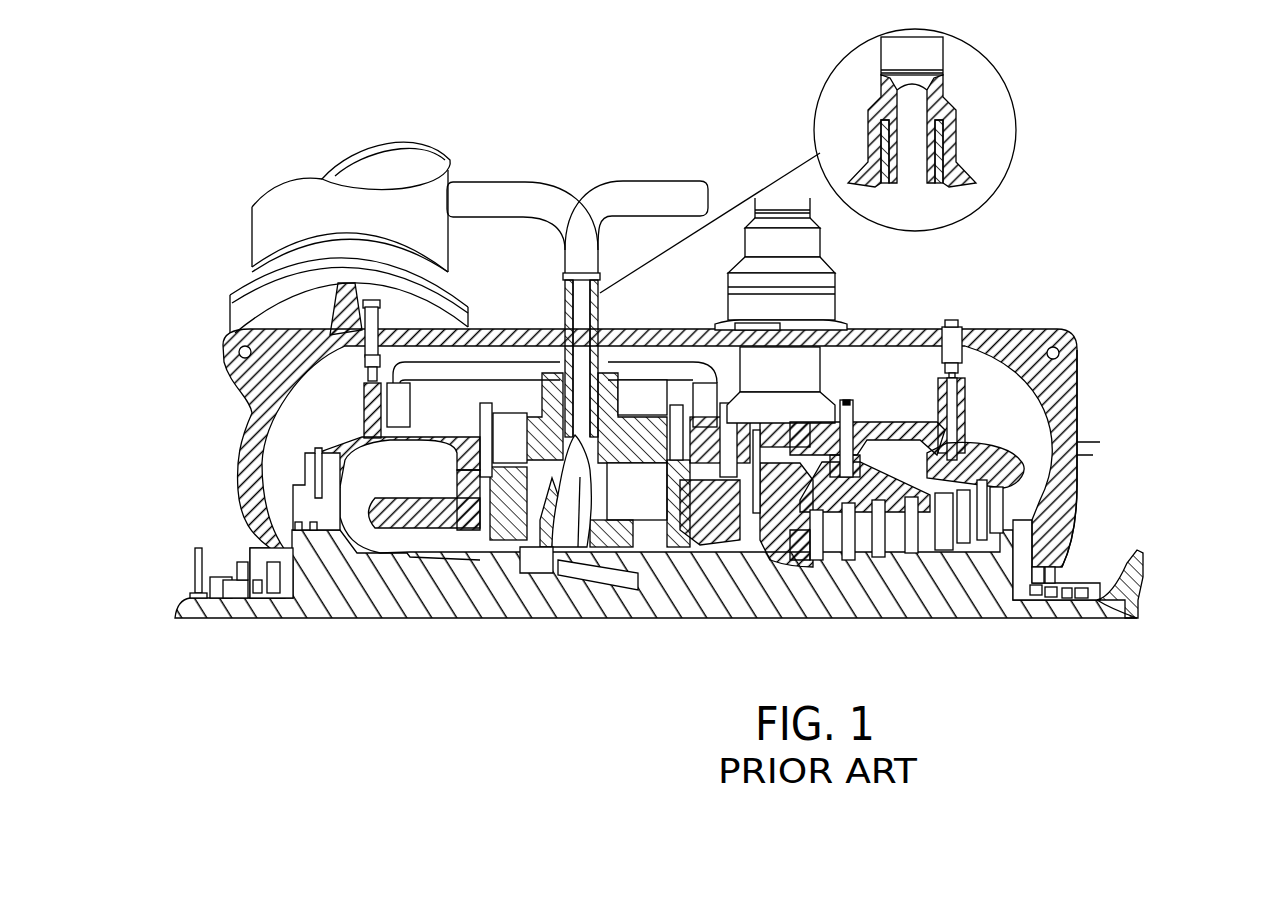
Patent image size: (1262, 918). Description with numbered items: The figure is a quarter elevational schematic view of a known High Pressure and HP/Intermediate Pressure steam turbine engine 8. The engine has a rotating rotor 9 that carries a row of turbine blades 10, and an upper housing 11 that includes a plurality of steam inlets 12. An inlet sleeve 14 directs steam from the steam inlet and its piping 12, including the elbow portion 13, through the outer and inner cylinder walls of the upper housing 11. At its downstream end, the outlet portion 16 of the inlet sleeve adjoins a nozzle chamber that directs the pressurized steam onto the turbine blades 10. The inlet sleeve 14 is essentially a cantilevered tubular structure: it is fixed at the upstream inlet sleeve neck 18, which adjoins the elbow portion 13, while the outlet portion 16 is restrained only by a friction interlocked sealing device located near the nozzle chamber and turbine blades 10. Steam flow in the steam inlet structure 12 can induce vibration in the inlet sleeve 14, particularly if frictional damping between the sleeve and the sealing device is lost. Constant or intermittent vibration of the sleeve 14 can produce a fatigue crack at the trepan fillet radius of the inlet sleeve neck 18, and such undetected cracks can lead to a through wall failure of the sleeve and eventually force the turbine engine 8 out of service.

The steam turbine engine 8 is at (1185, 303).
The rotor 9 is at (938, 590).
The turbine blades 10 is at (605, 573).
The upper housing 11 is at (1077, 489).
The steam inlets 12 is at (650, 140).
The elbow portion 13 is at (598, 210).
The inlet sleeve 14 is at (700, 316).
The outlet portion 16 is at (570, 473).
The inlet sleeve neck 18 is at (948, 137).